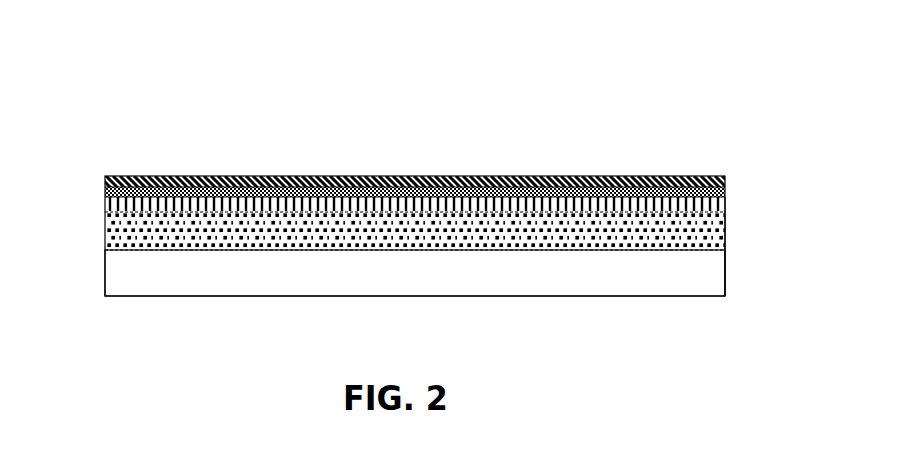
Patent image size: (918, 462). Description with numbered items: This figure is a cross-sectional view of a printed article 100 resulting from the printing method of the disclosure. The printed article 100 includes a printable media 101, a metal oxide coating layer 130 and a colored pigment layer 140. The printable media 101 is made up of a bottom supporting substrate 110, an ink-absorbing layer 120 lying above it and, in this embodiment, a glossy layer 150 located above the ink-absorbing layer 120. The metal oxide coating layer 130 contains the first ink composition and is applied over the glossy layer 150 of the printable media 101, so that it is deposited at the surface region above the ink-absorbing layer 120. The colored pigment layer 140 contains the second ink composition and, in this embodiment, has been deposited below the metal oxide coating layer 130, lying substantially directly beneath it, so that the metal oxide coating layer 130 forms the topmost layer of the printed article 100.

The printed article 100 is at (456, 112).
The printable media 101 is at (796, 195).
The bottom supporting substrate 110 is at (725, 268).
The ink-absorbing layer 120 is at (725, 232).
The metal oxide coating layer 130 is at (105, 180).
The colored pigment layer 140 is at (105, 193).
The glossy layer 150 is at (725, 202).